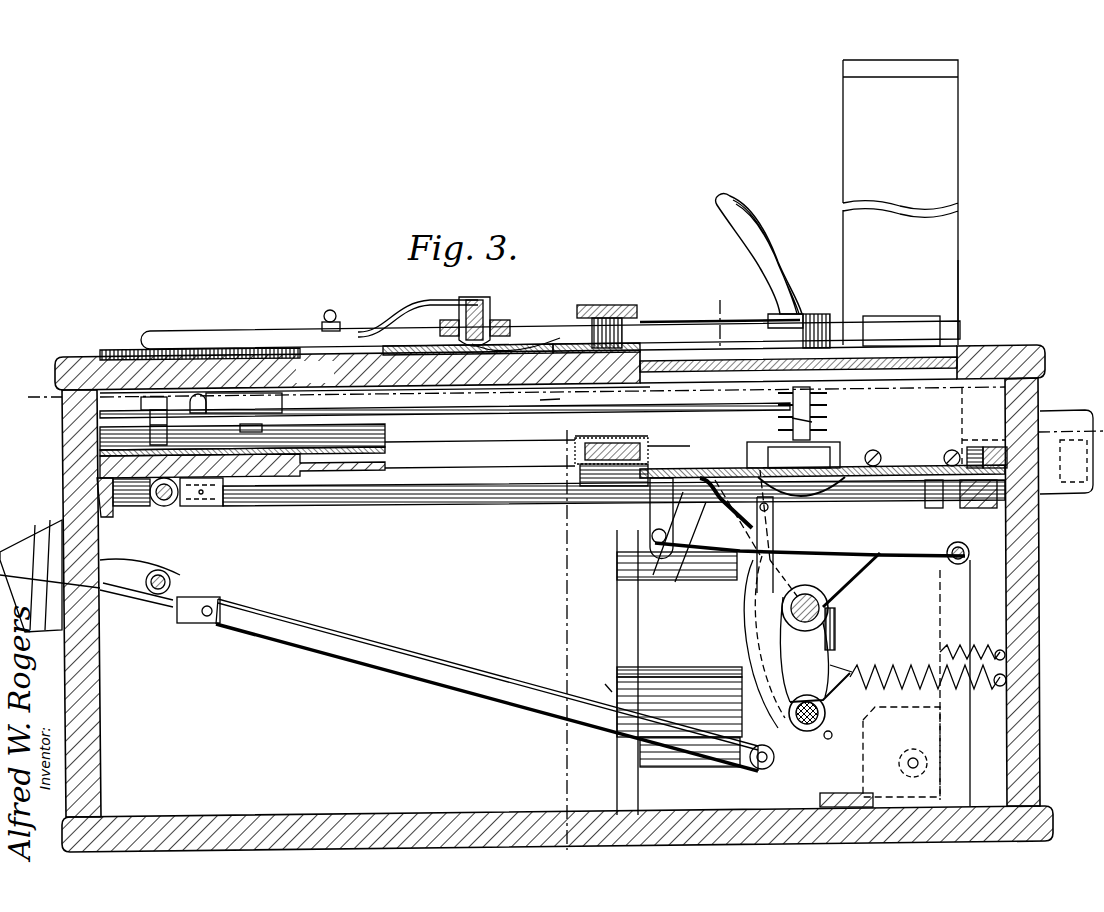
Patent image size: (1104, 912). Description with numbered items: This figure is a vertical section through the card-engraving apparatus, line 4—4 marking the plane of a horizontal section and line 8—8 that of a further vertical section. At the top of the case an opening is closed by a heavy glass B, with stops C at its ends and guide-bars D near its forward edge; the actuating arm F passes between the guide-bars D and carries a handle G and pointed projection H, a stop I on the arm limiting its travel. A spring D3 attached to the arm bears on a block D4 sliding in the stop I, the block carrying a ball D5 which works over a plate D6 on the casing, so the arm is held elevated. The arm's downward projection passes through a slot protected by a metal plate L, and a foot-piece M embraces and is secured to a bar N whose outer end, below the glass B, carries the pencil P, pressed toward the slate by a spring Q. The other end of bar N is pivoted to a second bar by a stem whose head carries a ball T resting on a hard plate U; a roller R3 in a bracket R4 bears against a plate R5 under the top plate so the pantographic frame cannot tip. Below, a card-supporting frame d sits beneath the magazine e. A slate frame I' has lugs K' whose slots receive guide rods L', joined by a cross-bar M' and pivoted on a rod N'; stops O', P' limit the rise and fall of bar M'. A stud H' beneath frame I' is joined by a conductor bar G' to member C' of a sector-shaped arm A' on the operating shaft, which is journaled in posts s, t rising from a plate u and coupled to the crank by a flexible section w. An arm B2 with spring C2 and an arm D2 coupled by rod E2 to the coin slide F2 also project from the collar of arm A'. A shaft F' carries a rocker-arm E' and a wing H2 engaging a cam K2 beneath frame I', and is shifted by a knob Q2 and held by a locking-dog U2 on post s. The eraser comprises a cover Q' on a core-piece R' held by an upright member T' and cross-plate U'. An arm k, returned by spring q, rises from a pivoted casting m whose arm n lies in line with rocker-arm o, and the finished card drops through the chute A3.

The section line 4— 4 is at (555, 440).
The section line 8— 8 is at (643, 576).
The stops C is at (900, 202).
The magazine e is at (946, 292).
The glass plate B is at (886, 366).
The handle G is at (759, 254).
The pointed projection H is at (765, 333).
The knob Q2 is at (817, 316).
The metal plate L is at (550, 317).
The actuating bar or arm F is at (342, 310).
The spring D3 is at (403, 318).
The stop I is at (475, 312).
The block D4 is at (490, 311).
The ball D5 is at (503, 304).
The plate D6 is at (553, 348).
The guide-bars D is at (632, 306).
The roller R3 is at (198, 398).
The ball T is at (135, 420).
The foot-piece M is at (244, 403).
The plate R5 is at (315, 372).
The hard plate U is at (255, 449).
The bar N is at (548, 418).
The cross-plate U' is at (611, 425).
The core-piece R' is at (669, 430).
The spring Q is at (776, 413).
The rocker-arm o is at (800, 422).
The pencil P is at (815, 440).
The slate frame I' is at (897, 438).
The lugs K' is at (942, 460).
The card-supporting plate or frame d is at (983, 442).
The stop O' is at (992, 438).
The eraser cover Q' is at (588, 452).
The cam K2 is at (746, 446).
The rod N' is at (168, 506).
The bracket R4 is at (253, 430).
The guide rods L' is at (614, 510).
The upright member T' is at (589, 510).
The stud or lug H' is at (620, 518).
The cross-bar M' is at (1020, 502).
The finger or member C' is at (810, 573).
The stop P' is at (968, 562).
The rocker-arm E' is at (695, 542).
The actuating or conductor bar G' is at (725, 537).
The locking-dog or detent U2 is at (760, 527).
The sector-shaped arm A' is at (691, 672).
The chute A3 is at (656, 754).
The shaft F' is at (815, 643).
The flexible shaft section w is at (808, 732).
The post t is at (818, 678).
The wing or lifter-arm H2 is at (850, 572).
The spring C2 is at (941, 645).
The arm k is at (945, 601).
The spring q is at (994, 640).
The arm B2 is at (913, 736).
The post s is at (832, 736).
The pivoted block or casting m is at (942, 743).
The plate u is at (899, 769).
The rod E2 is at (350, 656).
The arm D2 is at (752, 766).
The arm n is at (610, 688).
The coin-receiving and locking slide F2 is at (150, 594).